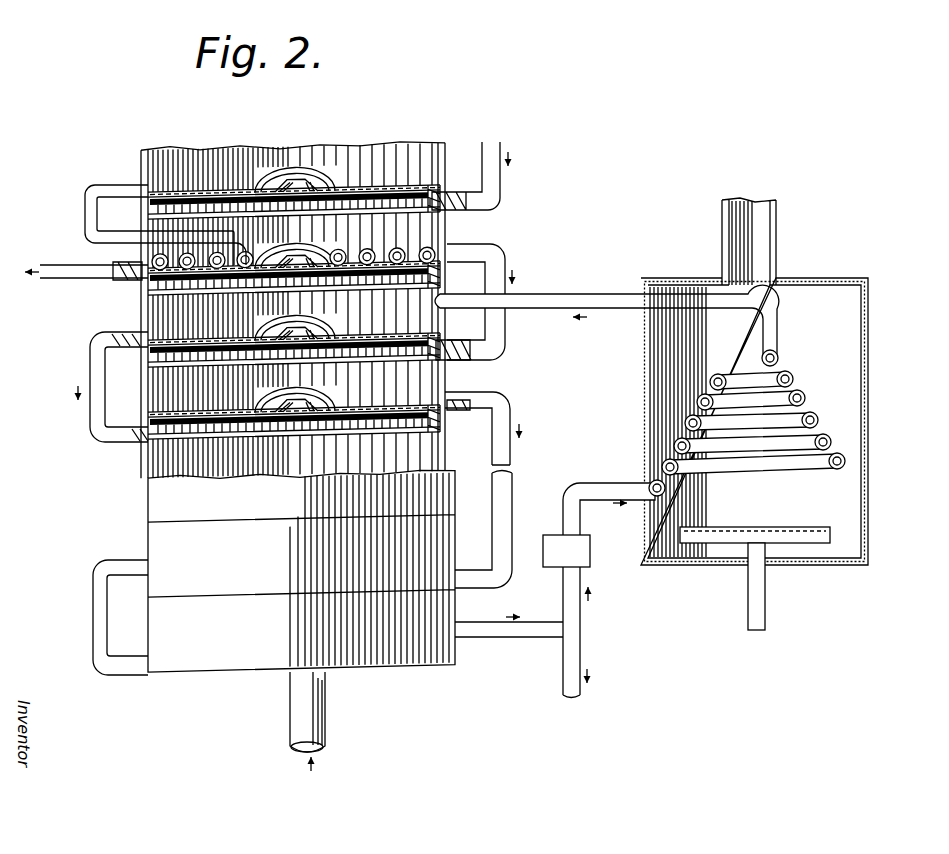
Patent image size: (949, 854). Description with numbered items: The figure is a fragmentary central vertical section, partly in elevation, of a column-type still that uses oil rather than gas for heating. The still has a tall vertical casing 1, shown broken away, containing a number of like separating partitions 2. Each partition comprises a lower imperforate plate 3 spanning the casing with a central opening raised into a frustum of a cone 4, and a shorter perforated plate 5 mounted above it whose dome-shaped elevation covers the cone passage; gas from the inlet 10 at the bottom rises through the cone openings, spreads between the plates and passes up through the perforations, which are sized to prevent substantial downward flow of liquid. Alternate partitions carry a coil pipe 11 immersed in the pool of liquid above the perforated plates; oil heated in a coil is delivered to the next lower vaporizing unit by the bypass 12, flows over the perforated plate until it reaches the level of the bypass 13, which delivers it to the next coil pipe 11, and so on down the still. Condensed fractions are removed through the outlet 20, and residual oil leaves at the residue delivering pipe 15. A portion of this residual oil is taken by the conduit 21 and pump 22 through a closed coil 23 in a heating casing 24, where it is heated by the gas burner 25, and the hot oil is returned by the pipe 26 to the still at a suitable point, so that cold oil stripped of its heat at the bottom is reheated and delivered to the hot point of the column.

The casing 1 is at (447, 160).
The separating partition 2 is at (450, 338).
The lower imperforate plate 3 is at (445, 266).
The frustum of a cone 4 is at (318, 178).
The perforated plate 5 is at (385, 190).
The inlet 10 is at (292, 715).
The coil pipe 11 is at (397, 253).
The bypass 12 is at (497, 180).
The bypass 13 is at (85, 222).
The residue delivering pipe 15 is at (517, 630).
The outlet 20 is at (65, 279).
The conduit 21 is at (573, 586).
The pump 22 is at (590, 551).
The closed coil 23 is at (845, 462).
The heating casing 24 is at (871, 495).
The gas burner 25 is at (832, 537).
The pipe 26 is at (571, 294).